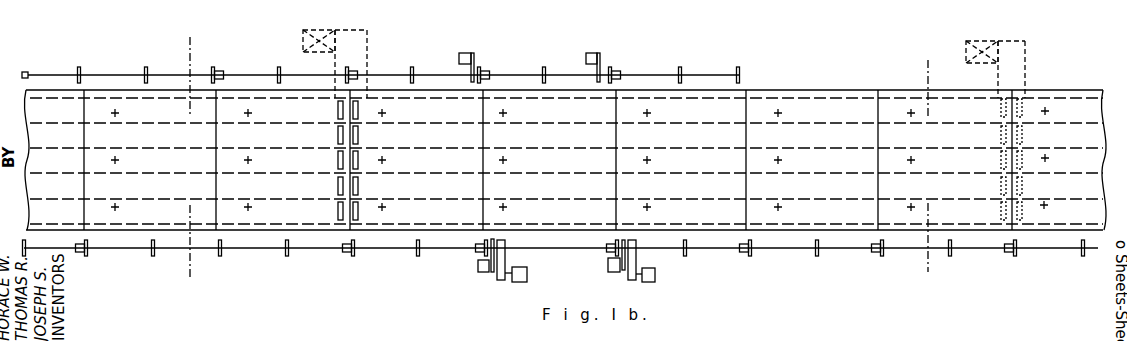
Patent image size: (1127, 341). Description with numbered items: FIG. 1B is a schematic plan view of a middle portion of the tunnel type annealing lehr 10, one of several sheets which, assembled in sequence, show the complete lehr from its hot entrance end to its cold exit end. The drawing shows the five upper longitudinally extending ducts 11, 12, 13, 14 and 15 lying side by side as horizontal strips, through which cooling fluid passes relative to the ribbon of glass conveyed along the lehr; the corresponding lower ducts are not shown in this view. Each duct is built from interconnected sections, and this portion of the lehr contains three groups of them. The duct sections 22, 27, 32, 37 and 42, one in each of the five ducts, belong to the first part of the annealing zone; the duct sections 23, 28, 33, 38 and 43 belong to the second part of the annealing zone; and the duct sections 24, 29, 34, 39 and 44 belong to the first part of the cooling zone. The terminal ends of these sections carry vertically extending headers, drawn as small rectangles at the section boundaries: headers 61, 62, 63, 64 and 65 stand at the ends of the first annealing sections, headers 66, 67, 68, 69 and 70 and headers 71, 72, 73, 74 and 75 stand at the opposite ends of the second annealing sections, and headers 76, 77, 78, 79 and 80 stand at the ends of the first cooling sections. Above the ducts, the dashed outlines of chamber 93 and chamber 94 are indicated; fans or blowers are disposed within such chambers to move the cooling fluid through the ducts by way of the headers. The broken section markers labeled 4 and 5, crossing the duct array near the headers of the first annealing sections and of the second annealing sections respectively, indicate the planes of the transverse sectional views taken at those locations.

The section line 4- 4 is at (190, 37).
The section line 5- 5 is at (928, 60).
The tunnel type annealing lehr 10 is at (516, 68).
The duct 11 is at (1105, 112).
The duct 12 is at (1105, 137).
The duct 13 is at (1105, 162).
The duct 14 is at (1105, 187).
The duct 15 is at (1105, 212).
The duct section 22 is at (132, 110).
The duct section 23 is at (553, 110).
The duct section 24 is at (1063, 110).
The duct section 27 is at (142, 135).
The duct section 28 is at (597, 135).
The duct section 29 is at (1074, 135).
The duct section 32 is at (132, 160).
The duct section 33 is at (553, 160).
The duct section 34 is at (1063, 160).
The duct section 37 is at (142, 186).
The duct section 38 is at (597, 186).
The duct section 39 is at (1074, 186).
The duct section 42 is at (132, 211).
The duct section 43 is at (553, 211).
The duct section 44 is at (1062, 210).
The vertically extending header 61 is at (338, 113).
The vertically extending header 62 is at (338, 138).
The vertically extending header 63 is at (338, 163).
The vertically extending header 64 is at (338, 189).
The vertically extending header 65 is at (338, 214).
The vertically extending header 66 is at (358, 110).
The vertically extending header 67 is at (358, 133).
The vertically extending header 68 is at (358, 158).
The vertically extending header 69 is at (358, 184).
The vertically extending header 70 is at (358, 209).
The vertically extending header 71 is at (1001, 112).
The vertically extending header 72 is at (1001, 137).
The vertically extending header 73 is at (1001, 162).
The vertically extending header 74 is at (1001, 188).
The vertically extending header 75 is at (1001, 213).
The vertically extending header 76 is at (1023, 106).
The vertically extending header 77 is at (1023, 135).
The vertically extending header 78 is at (1023, 160).
The vertically extending header 79 is at (1023, 186).
The vertically extending header 80 is at (1023, 210).
The chamber 93 is at (335, 42).
The chamber 94 is at (998, 53).